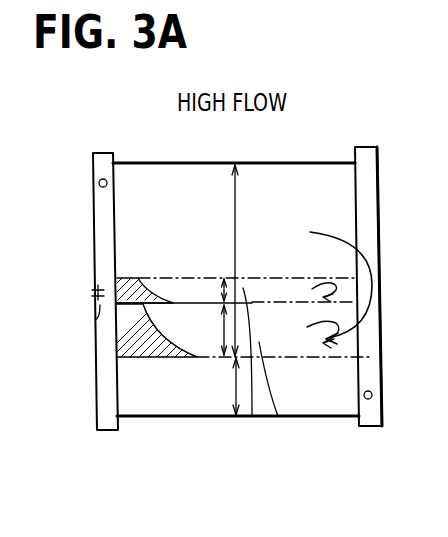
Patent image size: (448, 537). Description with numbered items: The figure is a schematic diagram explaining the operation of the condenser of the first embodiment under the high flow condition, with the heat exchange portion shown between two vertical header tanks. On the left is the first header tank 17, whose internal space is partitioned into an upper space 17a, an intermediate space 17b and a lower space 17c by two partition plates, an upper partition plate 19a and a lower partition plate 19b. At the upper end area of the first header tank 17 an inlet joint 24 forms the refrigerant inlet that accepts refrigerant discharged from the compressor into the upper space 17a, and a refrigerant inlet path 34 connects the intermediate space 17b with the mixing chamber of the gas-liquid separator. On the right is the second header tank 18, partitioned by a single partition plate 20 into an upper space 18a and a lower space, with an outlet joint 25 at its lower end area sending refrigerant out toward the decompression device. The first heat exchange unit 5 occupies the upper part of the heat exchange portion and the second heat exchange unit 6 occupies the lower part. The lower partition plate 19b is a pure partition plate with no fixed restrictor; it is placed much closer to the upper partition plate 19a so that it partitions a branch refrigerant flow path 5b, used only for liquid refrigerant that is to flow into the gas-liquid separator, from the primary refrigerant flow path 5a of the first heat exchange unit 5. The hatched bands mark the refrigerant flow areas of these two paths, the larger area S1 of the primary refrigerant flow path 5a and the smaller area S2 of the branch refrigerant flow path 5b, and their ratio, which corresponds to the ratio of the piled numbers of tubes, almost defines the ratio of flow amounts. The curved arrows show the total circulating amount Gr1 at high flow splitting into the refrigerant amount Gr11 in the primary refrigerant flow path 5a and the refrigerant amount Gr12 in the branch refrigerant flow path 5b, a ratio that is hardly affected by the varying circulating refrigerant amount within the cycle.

The first header tank 17 is at (93, 158).
The inlet joint 24 is at (99, 183).
The upper space 17a is at (104, 221).
The intermediate space 17b is at (95, 320).
The lower space 17c is at (107, 414).
The upper partition plate 19a is at (109, 275).
The lower partition plate 19b is at (112, 305).
The refrigerant inlet path 34 is at (92, 296).
The second header tank 18 is at (381, 153).
The upper space 18a is at (366, 192).
The partition plate 20 is at (372, 356).
The outlet joint 25 is at (372, 395).
The first heat exchange unit 5 is at (233, 213).
The second heat exchange unit 6 is at (234, 385).
The primary refrigerant flow path 5a is at (278, 416).
The branch refrigerant flow path 5b is at (252, 416).
The refrigerant flow area of primary flow path S1 is at (207, 330).
The refrigerant flow area of branch flow path S2 is at (207, 292).
The total circulating amount Gr1 is at (310, 232).
The refrigerant amount in primary refrigerant flow path Gr11 is at (298, 333).
The refrigerant amount in branch refrigerant flow path Gr12 is at (297, 291).